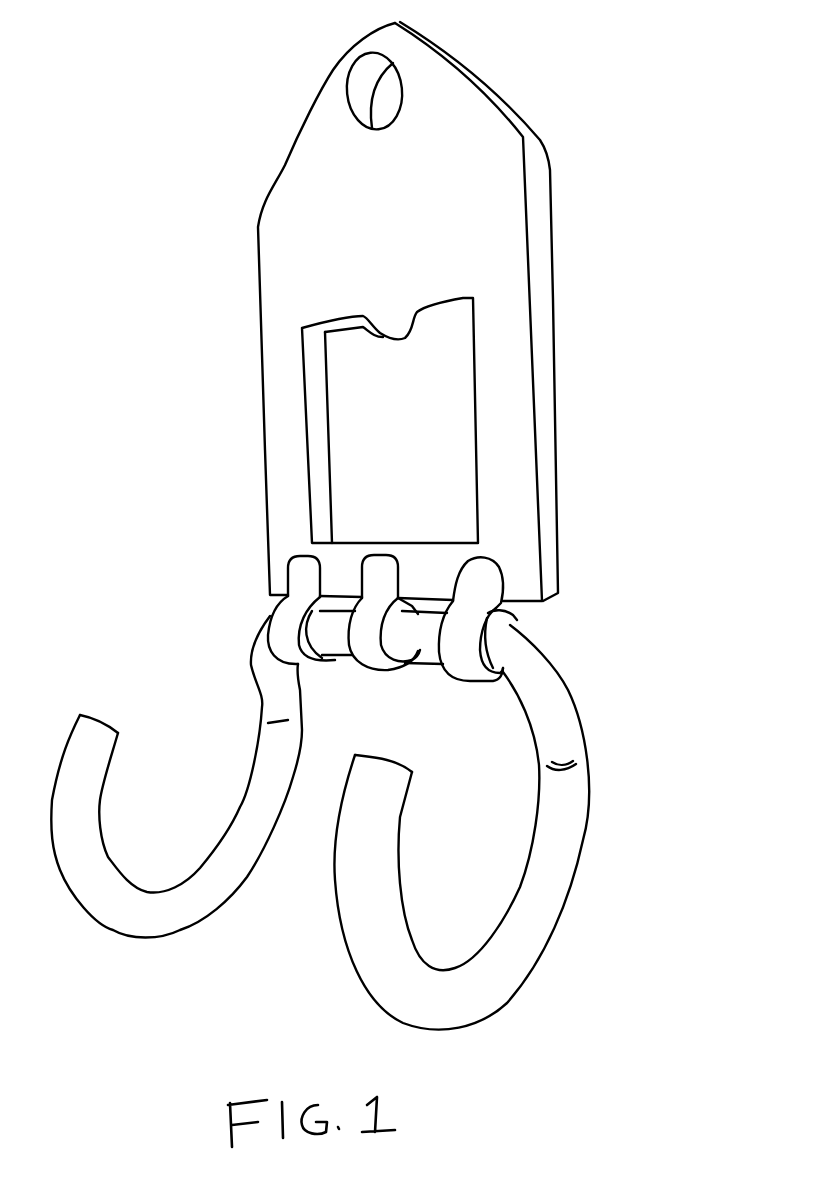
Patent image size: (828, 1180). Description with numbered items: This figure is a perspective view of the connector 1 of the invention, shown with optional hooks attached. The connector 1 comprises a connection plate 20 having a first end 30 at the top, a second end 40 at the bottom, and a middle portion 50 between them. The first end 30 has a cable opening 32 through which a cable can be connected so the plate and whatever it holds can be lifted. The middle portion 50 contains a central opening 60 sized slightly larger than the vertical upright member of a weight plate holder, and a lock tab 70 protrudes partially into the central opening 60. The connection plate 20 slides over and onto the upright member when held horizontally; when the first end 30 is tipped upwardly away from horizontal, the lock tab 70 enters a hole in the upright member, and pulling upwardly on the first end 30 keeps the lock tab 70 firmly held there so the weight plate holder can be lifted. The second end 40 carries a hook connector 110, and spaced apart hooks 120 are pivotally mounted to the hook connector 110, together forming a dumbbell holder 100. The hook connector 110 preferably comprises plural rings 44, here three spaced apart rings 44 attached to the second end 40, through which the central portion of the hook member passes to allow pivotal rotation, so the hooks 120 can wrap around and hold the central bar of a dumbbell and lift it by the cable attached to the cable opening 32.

The connector 1 is at (379, 526).
The connection plate 20 is at (608, 282).
The first end 30 is at (530, 72).
The cable opening 32 is at (388, 87).
The second end 40 is at (606, 529).
The middle portion 50 is at (597, 395).
The central opening 60 is at (407, 435).
The lock tab 70 is at (268, 336).
The rings 44 is at (385, 644).
The hook connector 110 is at (593, 610).
The dumbbell holder 100 is at (597, 845).
The hooks 120 is at (392, 918).